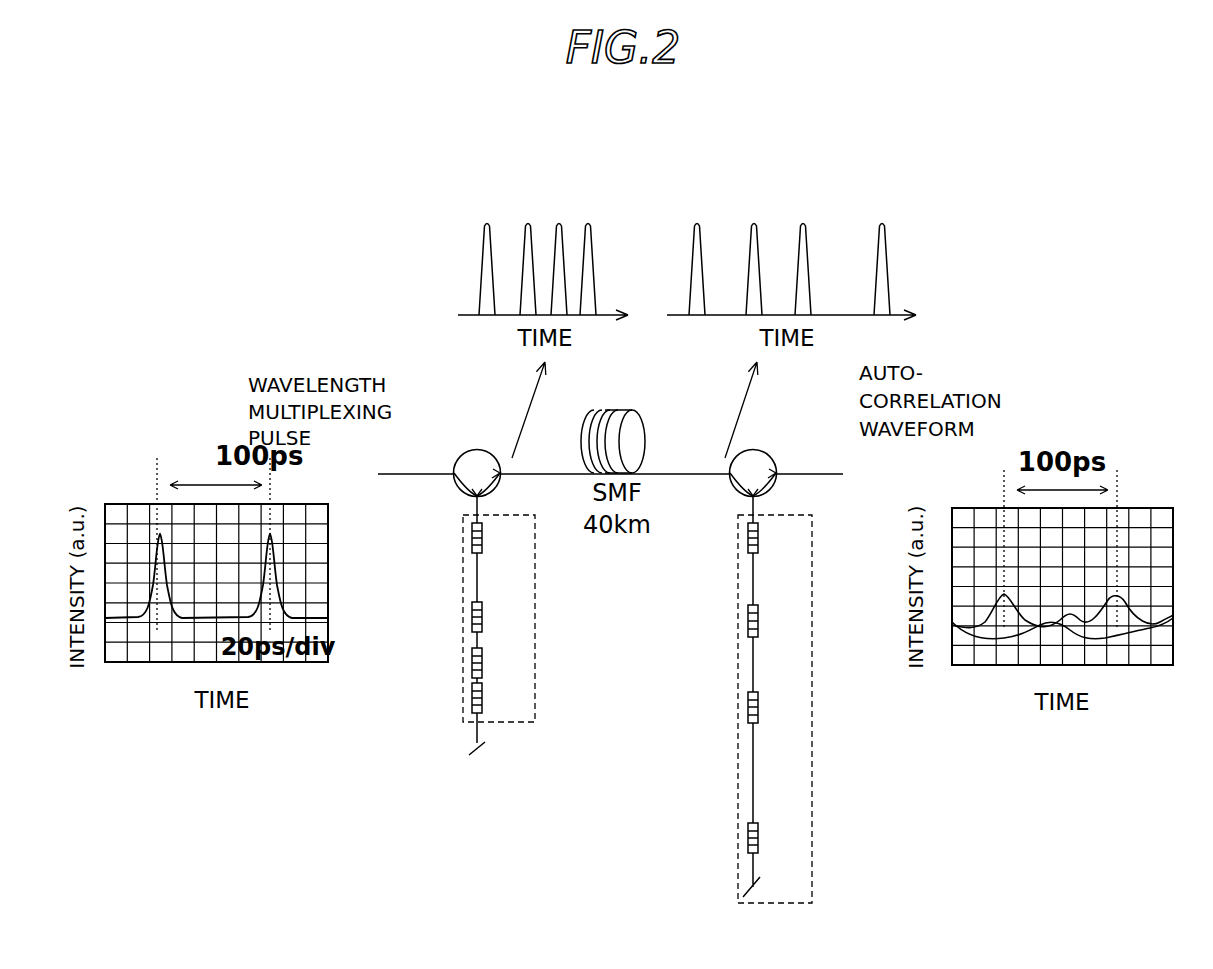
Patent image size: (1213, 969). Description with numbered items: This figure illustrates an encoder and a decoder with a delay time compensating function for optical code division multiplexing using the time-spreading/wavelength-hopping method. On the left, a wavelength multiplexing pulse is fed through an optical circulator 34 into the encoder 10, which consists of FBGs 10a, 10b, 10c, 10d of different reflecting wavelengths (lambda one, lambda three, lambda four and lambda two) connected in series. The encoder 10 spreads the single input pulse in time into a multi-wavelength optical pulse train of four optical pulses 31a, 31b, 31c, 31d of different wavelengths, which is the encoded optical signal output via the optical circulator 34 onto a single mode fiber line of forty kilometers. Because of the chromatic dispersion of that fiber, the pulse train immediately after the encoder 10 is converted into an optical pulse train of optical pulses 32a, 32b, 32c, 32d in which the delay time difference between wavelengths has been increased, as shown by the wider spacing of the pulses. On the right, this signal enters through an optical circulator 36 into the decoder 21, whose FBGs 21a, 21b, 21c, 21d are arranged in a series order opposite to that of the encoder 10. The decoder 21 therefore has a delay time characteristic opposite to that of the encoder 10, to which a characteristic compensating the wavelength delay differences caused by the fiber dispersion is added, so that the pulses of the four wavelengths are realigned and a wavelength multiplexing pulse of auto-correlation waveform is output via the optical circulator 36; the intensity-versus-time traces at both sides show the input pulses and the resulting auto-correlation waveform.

The encoder 10 is at (491, 626).
The FBG 10a is at (471, 541).
The FBG 10b is at (471, 618).
The FBG 10c is at (471, 664).
The FBG 10d is at (471, 698).
The decoder 21 is at (769, 700).
The FBG 21a is at (747, 841).
The FBG 21b is at (747, 709).
The FBG 21c is at (747, 624).
The FBG 21d is at (747, 541).
The optical pulse 31a is at (482, 249).
The optical pulse 31b is at (524, 249).
The optical pulse 31c is at (554, 249).
The optical pulse 31d is at (594, 249).
The optical pulse 32a is at (692, 249).
The optical pulse 32b is at (749, 249).
The optical pulse 32c is at (798, 249).
The optical pulse 32d is at (887, 249).
The optical circulator 34 is at (468, 452).
The optical circulator 36 is at (760, 452).